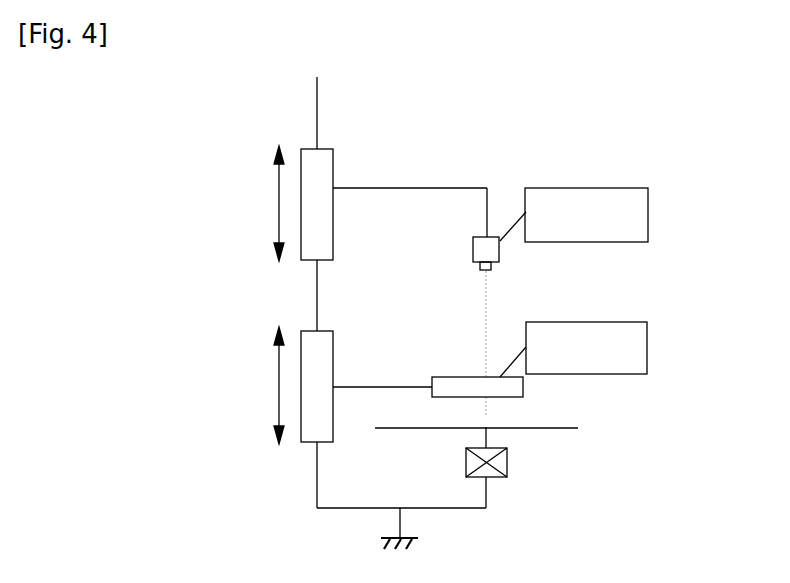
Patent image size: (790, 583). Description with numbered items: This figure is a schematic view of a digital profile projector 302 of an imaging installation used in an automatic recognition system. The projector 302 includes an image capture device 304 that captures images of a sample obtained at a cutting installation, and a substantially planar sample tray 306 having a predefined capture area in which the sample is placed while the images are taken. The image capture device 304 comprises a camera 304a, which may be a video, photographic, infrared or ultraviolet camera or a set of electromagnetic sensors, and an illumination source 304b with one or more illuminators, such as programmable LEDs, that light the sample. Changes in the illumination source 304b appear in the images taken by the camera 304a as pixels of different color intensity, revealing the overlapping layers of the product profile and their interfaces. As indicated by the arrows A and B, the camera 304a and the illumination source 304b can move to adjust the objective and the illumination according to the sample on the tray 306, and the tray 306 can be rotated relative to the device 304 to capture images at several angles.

The digital profile projector 302 is at (628, 143).
The image capture device 304 is at (408, 185).
The camera 304a is at (648, 218).
The illumination source 304b is at (647, 352).
The sample tray 306 is at (567, 427).